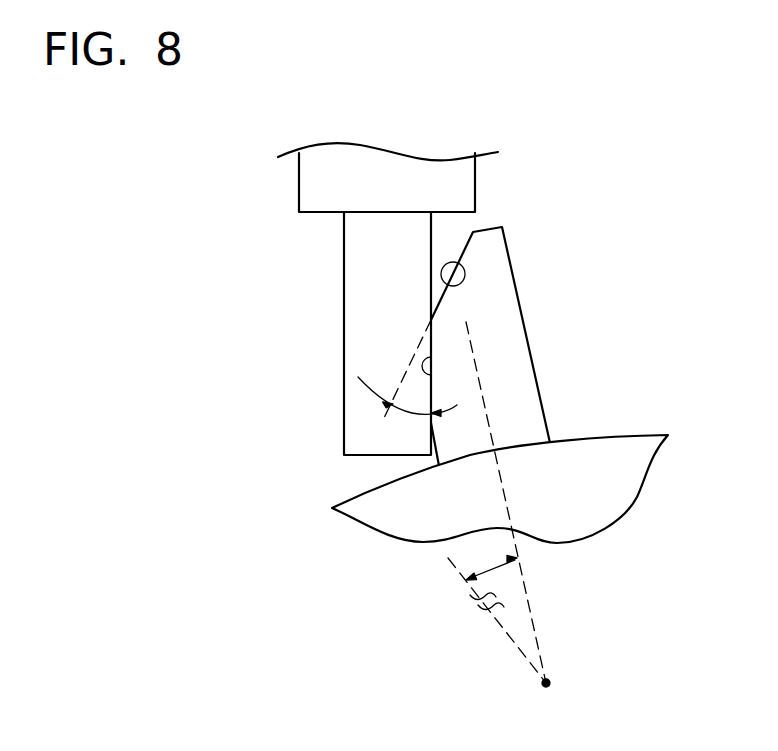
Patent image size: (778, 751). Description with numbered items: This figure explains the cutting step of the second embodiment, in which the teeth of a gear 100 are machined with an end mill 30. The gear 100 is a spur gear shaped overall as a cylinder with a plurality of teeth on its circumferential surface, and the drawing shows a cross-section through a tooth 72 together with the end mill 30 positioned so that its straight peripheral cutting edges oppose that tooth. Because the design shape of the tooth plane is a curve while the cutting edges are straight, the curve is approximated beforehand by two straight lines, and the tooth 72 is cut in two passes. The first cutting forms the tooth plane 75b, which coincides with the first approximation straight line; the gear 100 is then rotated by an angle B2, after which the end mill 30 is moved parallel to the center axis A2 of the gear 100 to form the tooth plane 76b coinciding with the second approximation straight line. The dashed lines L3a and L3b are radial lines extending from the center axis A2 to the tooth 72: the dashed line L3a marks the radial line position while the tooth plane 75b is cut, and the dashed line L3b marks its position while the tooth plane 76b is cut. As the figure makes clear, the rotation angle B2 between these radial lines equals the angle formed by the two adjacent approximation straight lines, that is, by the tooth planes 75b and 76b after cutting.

The end mill 30 is at (448, 187).
The tooth 72 is at (522, 388).
The tooth plane 75b is at (458, 286).
The tooth plane 76b is at (432, 376).
The gear 100 is at (652, 425).
The angle B2 is at (410, 413).
The dashed line L3a is at (503, 628).
The dashed line L3b is at (530, 612).
The center axis A2 is at (548, 700).